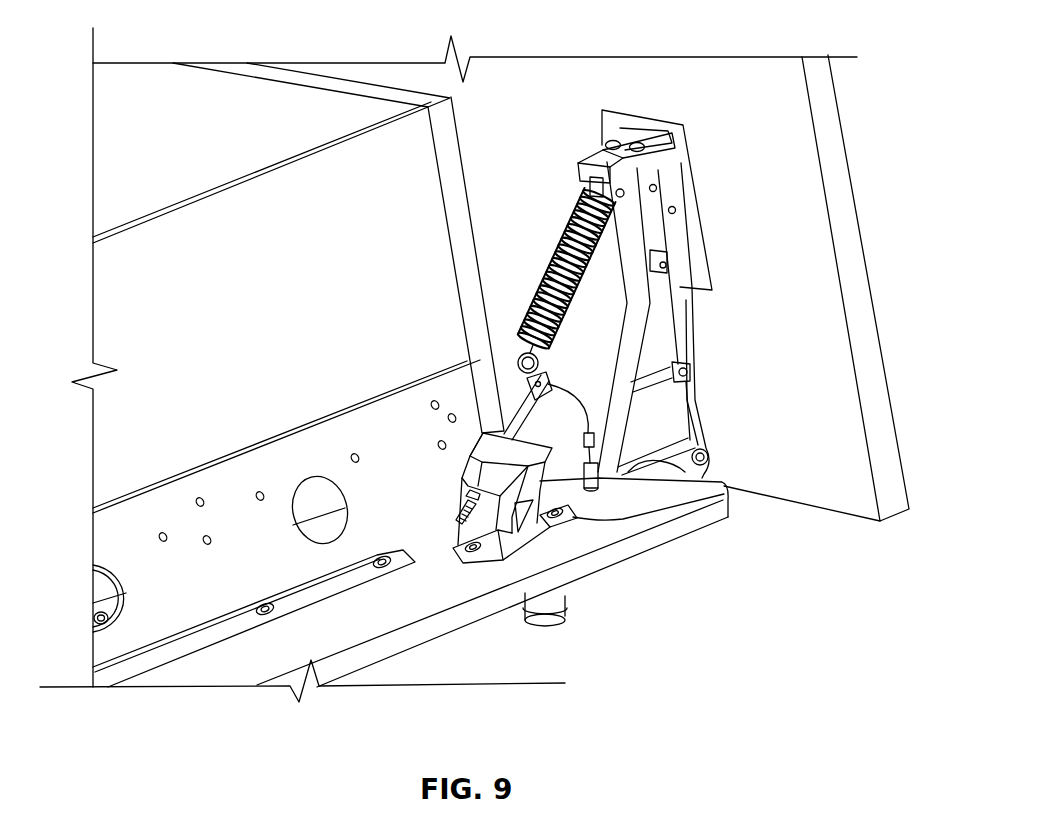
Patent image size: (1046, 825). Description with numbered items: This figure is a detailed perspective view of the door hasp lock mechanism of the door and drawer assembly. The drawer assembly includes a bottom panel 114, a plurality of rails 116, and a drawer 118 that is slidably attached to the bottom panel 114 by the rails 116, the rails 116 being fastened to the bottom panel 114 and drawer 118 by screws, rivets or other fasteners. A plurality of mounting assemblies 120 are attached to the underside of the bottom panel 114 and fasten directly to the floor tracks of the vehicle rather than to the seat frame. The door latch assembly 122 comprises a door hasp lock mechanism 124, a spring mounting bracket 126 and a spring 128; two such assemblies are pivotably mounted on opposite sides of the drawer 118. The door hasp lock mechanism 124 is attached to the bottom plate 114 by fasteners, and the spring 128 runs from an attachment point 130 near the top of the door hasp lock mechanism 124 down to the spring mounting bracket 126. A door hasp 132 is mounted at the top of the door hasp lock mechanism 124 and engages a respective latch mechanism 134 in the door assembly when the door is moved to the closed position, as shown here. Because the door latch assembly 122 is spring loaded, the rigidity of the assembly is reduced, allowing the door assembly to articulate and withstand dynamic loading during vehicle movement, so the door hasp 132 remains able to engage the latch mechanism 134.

The bottom panel 114 is at (582, 567).
The rails 116 is at (323, 447).
The drawer 118 is at (260, 193).
The mounting assemblies 120 is at (537, 602).
The door latch assembly 122 is at (709, 408).
The door hasp lock mechanism 124 is at (693, 335).
The spring mounting bracket 126 is at (475, 470).
The spring 128 is at (562, 233).
The attachment point 130 is at (578, 165).
The door hasp 132 is at (615, 140).
The latch mechanism 134 is at (693, 150).